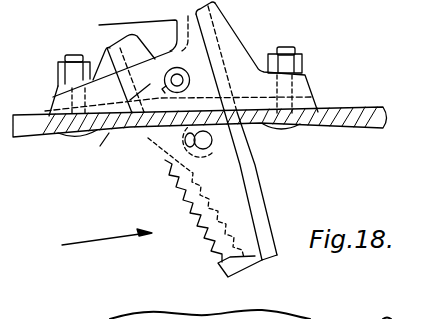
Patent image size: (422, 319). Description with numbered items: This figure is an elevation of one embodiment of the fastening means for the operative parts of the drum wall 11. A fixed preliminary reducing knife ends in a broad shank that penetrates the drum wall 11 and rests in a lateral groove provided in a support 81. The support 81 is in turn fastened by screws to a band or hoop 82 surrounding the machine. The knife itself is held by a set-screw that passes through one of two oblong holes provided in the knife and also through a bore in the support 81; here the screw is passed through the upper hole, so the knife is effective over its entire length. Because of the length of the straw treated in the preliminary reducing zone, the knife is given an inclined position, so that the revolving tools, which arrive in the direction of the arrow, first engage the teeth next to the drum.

The support 81 is at (225, 31).
The band or hoop 82 is at (343, 107).
The drum wall 11 is at (102, 153).